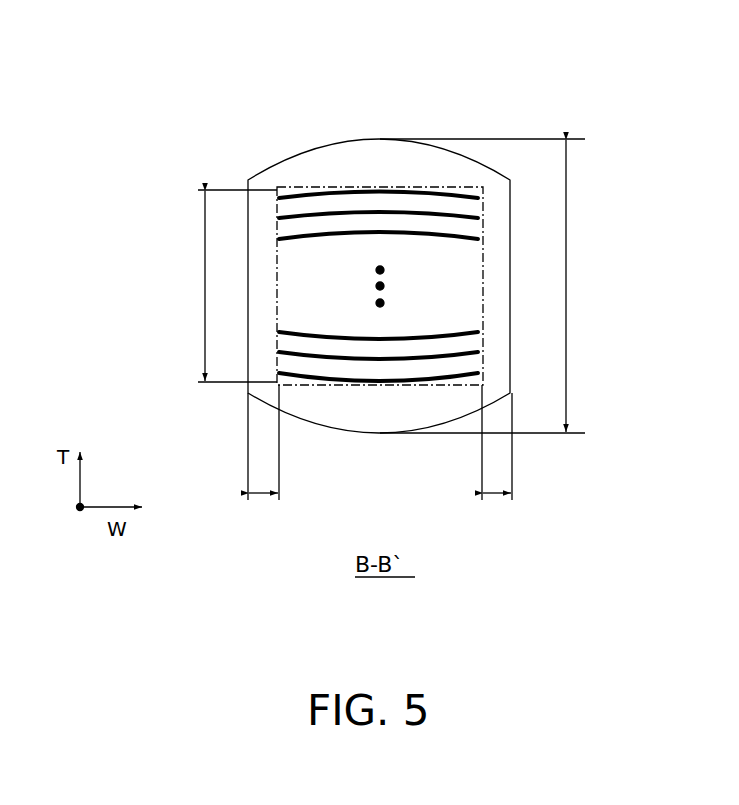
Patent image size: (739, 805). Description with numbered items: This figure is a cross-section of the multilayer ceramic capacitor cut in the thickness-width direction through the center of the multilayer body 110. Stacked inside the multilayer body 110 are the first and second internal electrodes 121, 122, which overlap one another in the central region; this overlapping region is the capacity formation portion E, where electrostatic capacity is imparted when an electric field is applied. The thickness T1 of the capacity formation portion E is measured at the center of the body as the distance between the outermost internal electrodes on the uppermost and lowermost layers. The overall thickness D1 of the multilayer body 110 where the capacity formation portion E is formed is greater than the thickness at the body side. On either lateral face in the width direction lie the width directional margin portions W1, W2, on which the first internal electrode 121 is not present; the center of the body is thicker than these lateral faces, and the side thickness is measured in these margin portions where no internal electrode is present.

The multilayer body 110 is at (382, 139).
The first internal electrode 121 is at (345, 210).
The second internal electrode 122 is at (448, 192).
The capacity formation portion E is at (282, 185).
The thickness of the capacity formation portion T1 is at (224, 286).
The thickness of the multilayer body D1 is at (491, 286).
The width directional margin portion W1 is at (265, 460).
The width directional margin portion W2 is at (499, 460).